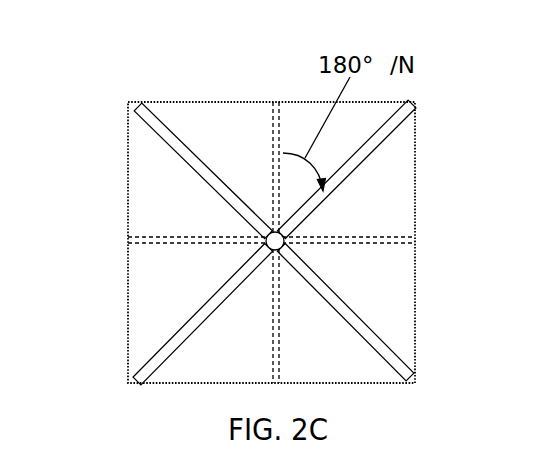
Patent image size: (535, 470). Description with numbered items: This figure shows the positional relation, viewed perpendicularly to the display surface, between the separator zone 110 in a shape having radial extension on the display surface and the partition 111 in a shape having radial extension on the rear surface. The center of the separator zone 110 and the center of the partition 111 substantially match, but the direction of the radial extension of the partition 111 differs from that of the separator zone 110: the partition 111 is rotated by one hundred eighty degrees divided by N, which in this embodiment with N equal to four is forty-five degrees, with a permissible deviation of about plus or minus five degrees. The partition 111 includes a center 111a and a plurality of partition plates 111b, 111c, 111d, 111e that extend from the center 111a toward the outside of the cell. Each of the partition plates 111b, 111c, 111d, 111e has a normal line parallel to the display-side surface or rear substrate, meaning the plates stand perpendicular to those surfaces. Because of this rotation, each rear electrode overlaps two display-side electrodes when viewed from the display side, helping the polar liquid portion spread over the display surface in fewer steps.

The separator zone 110 is at (273, 102).
The partition 111 is at (239, 226).
The center 111a is at (265, 239).
The partition plate 111b is at (234, 198).
The partition plate 111c is at (172, 340).
The partition plate 111d is at (372, 148).
The partition plate 111e is at (380, 347).